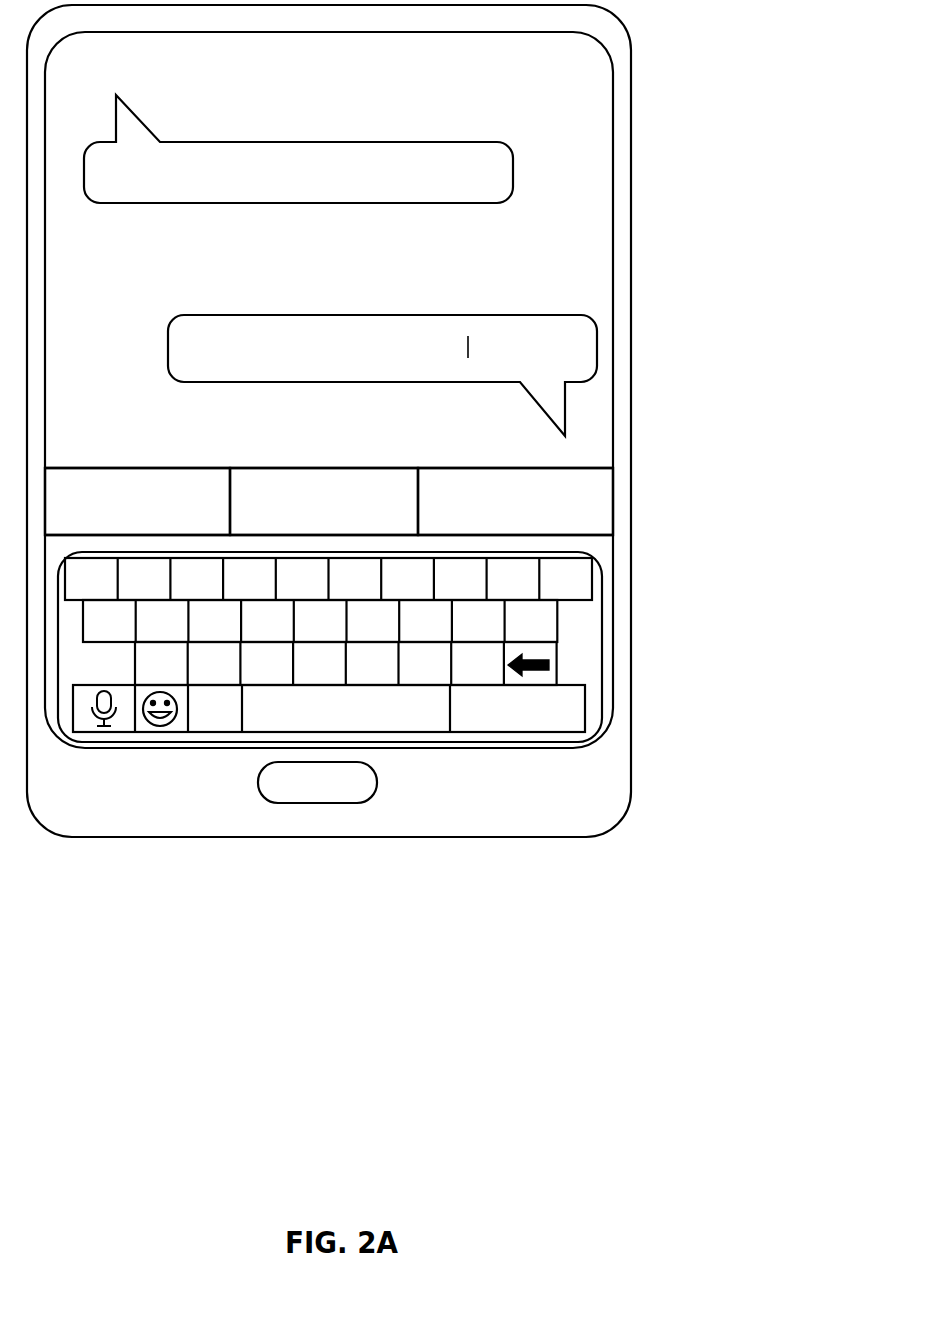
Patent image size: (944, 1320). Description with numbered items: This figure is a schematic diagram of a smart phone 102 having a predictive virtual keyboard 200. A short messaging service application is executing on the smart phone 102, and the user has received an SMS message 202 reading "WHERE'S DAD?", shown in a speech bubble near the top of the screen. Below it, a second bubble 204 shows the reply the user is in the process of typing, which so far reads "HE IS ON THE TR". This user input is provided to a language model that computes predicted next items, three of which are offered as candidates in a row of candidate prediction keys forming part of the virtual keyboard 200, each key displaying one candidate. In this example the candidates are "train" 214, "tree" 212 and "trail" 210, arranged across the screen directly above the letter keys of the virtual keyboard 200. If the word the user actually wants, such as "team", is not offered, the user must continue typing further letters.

The smart phone 102 is at (631, 42).
The predictive virtual keyboard 200 is at (590, 640).
The SMS message 202 is at (475, 142).
The composed message bubble 204 is at (168, 346).
The candidate "trail" 210 is at (533, 479).
The candidate "tree" 212 is at (352, 479).
The candidate "train" 214 is at (153, 479).